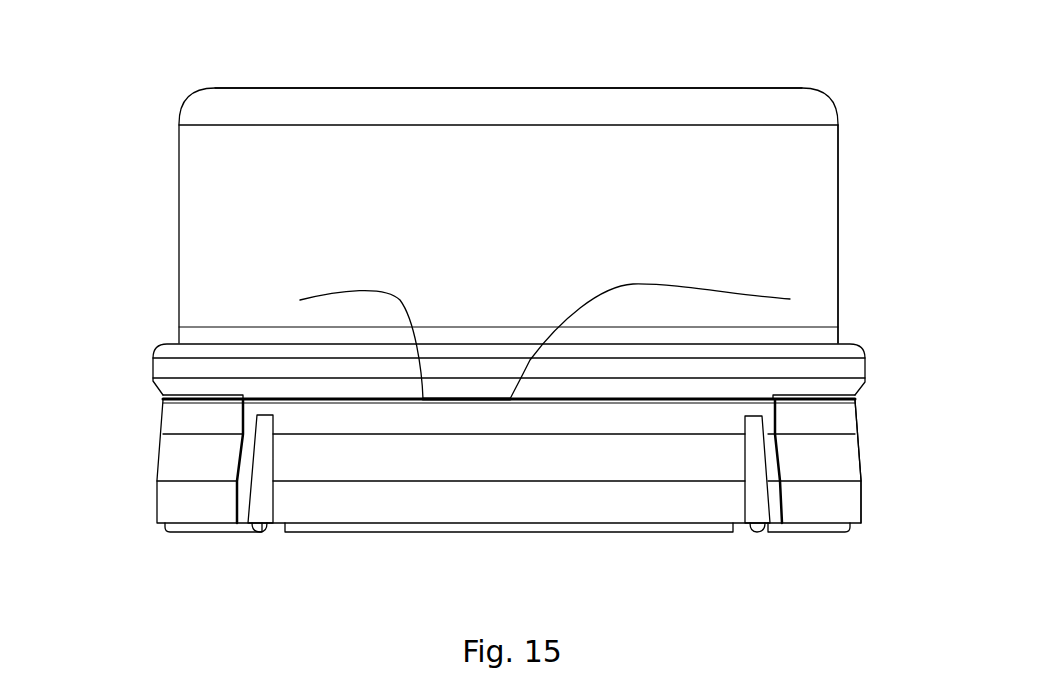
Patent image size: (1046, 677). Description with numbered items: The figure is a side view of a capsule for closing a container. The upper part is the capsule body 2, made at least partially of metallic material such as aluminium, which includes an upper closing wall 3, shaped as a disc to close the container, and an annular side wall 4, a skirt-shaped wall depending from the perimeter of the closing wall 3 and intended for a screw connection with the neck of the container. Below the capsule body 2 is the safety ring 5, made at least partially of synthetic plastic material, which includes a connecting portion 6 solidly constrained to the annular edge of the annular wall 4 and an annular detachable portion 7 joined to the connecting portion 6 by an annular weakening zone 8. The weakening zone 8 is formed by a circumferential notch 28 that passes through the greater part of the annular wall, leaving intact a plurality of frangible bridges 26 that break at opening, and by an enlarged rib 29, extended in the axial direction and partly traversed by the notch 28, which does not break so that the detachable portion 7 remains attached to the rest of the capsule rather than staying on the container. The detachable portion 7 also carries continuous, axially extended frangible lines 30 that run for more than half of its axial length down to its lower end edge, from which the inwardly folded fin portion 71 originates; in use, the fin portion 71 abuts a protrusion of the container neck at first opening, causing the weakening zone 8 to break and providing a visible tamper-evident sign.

The capsule body 2 is at (190, 177).
The upper closing wall 3 is at (508, 87).
The annular side wall 4 is at (807, 223).
The safety ring 5 is at (847, 458).
The connecting portion 6 is at (857, 370).
The annular detachable portion 7 is at (168, 452).
The annular weakening zone 8 is at (203, 402).
The frangible bridges 26 is at (368, 399).
The circumferential notch 28 is at (622, 400).
The rib 29 is at (790, 299).
The frangible line 30 is at (272, 495).
The fin portion 71 is at (230, 525).